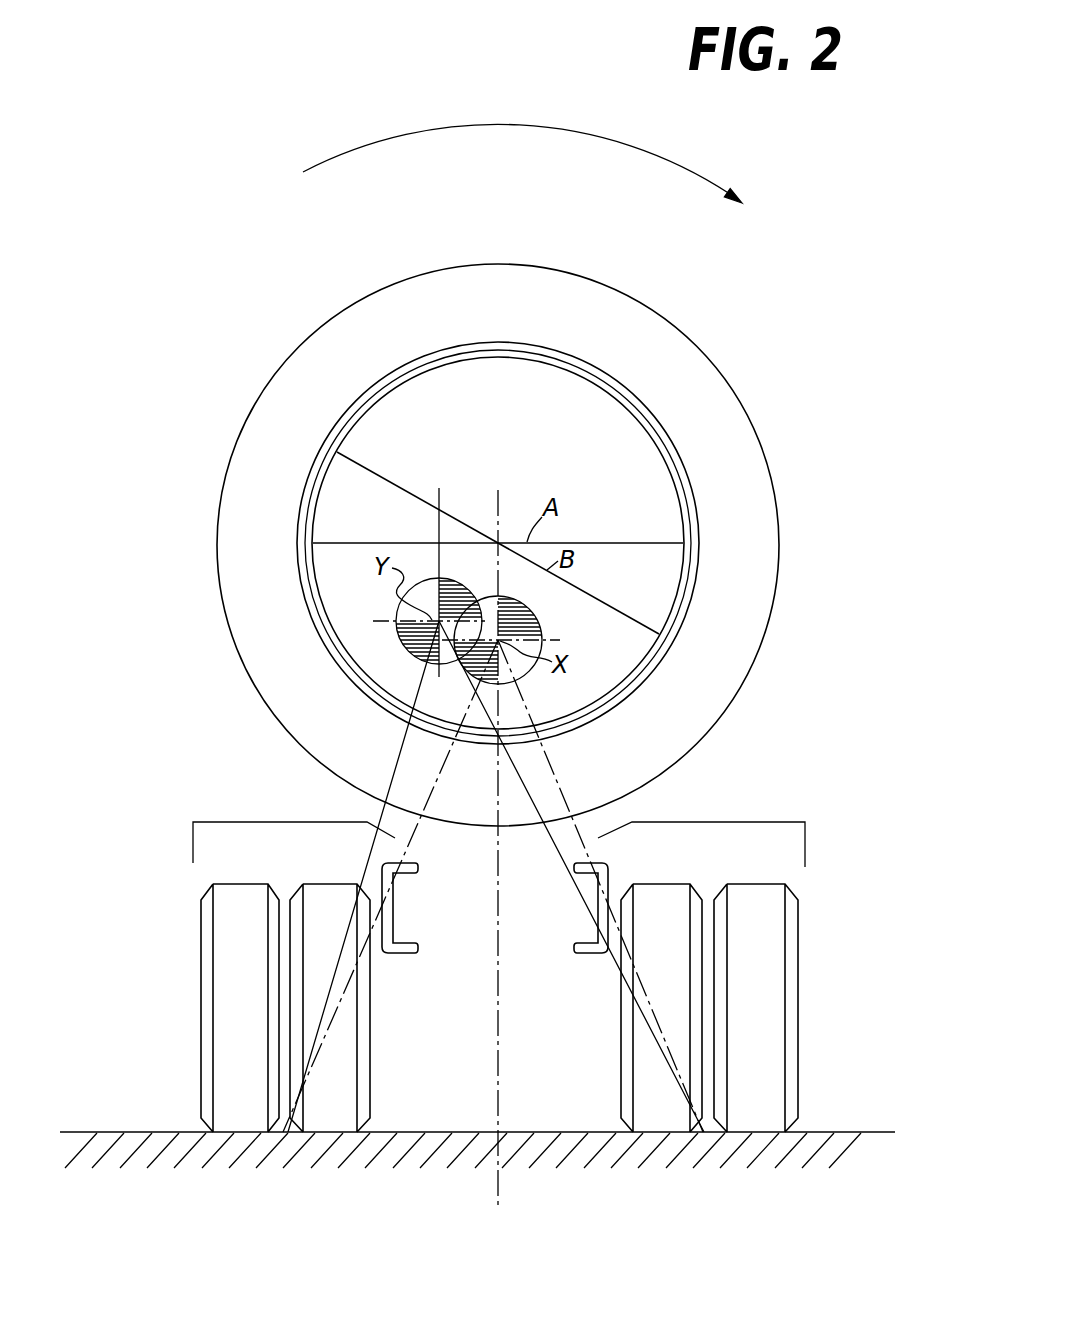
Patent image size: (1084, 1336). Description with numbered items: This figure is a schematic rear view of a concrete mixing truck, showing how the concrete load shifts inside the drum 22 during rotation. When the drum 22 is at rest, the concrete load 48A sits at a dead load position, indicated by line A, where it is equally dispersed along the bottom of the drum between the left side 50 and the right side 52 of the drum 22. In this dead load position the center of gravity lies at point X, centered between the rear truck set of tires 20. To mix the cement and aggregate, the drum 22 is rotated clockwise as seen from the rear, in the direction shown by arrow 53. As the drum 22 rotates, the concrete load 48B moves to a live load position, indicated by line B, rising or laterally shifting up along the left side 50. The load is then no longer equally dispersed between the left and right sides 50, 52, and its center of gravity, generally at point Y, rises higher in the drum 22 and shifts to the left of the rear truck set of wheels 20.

The rear truck set of tires 20 is at (640, 1135).
The drum 22 is at (259, 396).
The concrete load 48A is at (617, 554).
The concrete load 48B is at (595, 614).
The left side 50 is at (316, 508).
The right side 52 is at (687, 522).
The arrow 53 is at (521, 125).